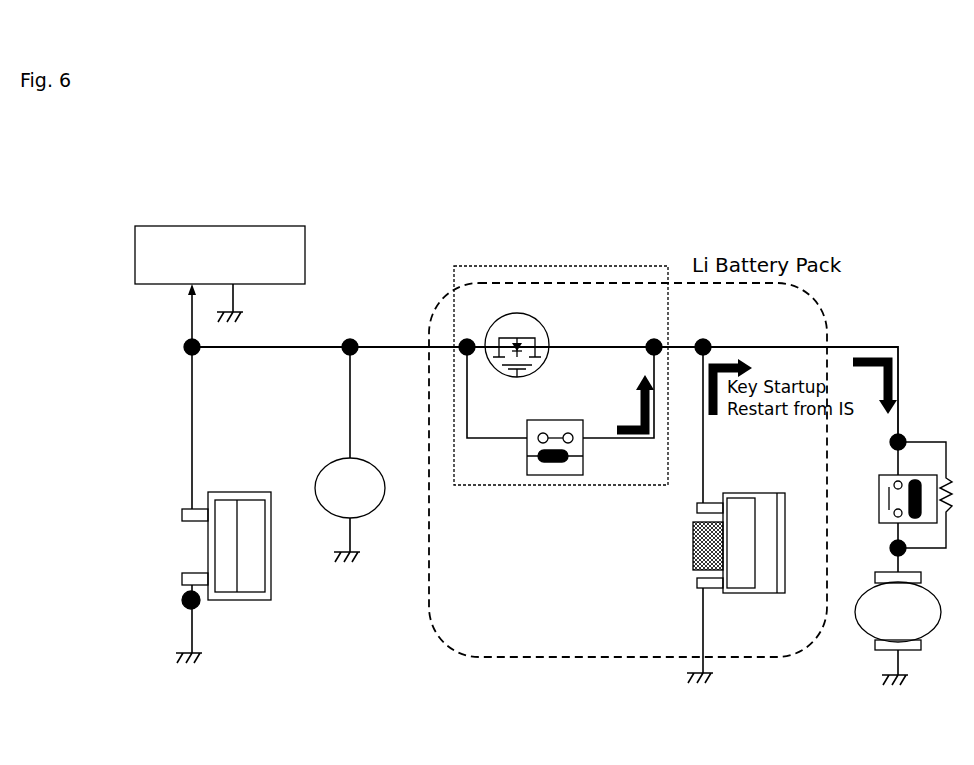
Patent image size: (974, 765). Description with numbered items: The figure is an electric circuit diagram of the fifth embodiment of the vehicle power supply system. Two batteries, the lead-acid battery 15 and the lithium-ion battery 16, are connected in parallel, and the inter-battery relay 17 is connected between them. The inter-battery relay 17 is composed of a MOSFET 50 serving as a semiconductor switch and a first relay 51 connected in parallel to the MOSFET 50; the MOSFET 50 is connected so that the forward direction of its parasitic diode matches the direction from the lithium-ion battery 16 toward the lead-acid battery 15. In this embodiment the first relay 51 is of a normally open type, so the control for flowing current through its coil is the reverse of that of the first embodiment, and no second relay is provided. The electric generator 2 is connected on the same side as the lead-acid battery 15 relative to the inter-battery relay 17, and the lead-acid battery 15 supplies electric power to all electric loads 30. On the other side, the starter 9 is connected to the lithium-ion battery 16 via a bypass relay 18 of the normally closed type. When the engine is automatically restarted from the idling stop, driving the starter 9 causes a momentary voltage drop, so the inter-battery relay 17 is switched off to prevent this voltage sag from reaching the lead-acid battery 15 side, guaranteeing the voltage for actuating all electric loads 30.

The all electric loads 30 is at (230, 226).
The lead-acid battery 15 is at (257, 492).
The electric generator 2 is at (372, 462).
The inter-battery relay 17 is at (513, 266).
The MOSFET 50 is at (528, 313).
The first relay 51 is at (537, 475).
The lithium-ion battery 16 is at (693, 558).
The bypass relay 18 is at (879, 475).
The starter 9 is at (935, 626).